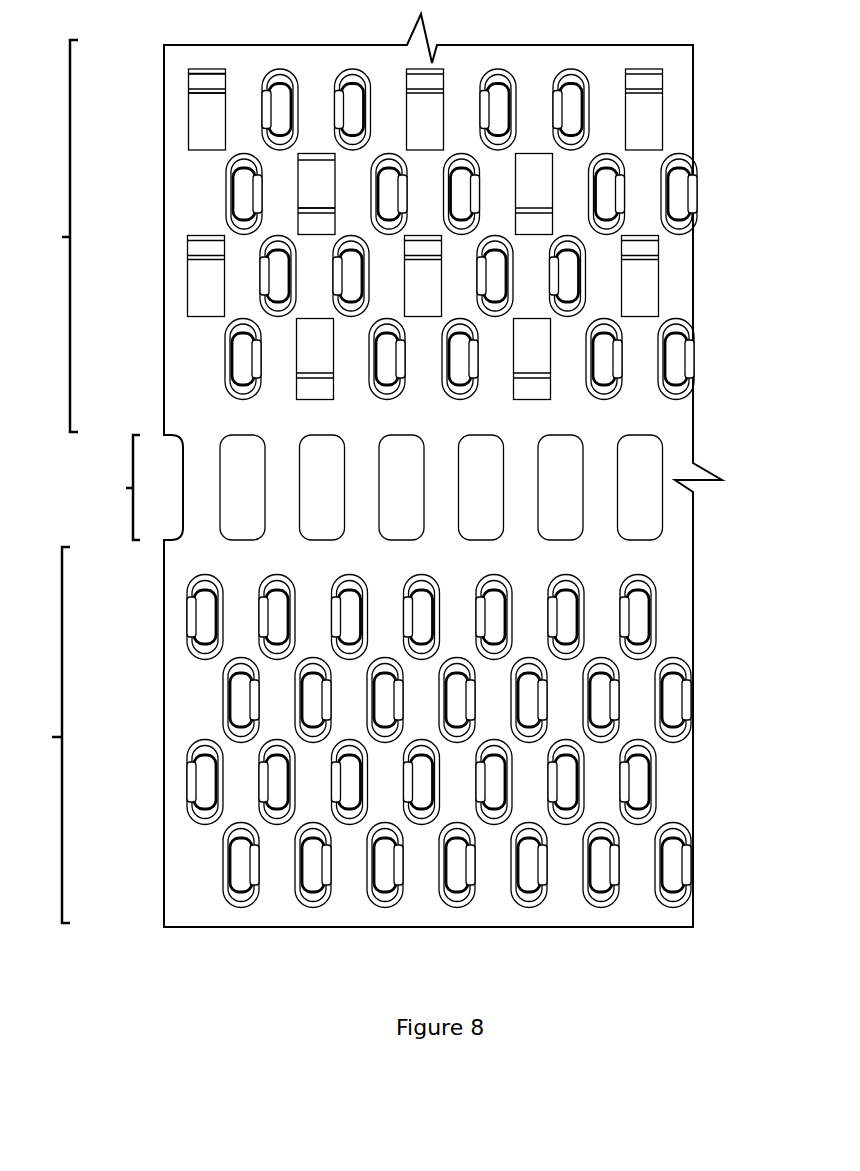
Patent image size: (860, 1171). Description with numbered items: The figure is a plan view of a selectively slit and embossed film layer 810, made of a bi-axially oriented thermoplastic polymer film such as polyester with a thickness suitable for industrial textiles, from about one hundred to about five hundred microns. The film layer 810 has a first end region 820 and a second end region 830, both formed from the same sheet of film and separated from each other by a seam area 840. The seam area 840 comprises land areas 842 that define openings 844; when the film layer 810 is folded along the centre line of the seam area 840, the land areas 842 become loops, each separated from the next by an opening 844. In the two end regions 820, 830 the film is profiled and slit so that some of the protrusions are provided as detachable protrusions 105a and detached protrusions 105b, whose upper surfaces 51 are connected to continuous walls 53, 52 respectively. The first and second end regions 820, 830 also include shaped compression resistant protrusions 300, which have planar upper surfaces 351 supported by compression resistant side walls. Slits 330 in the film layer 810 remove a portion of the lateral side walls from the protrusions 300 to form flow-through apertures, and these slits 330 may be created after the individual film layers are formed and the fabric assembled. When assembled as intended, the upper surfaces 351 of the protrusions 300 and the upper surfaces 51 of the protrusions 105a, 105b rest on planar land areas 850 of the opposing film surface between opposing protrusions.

The film layer 810 is at (740, 148).
The first end region 820 is at (48, 236).
The second end region 830 is at (41, 735).
The seam area 840 is at (334, 487).
The land areas 842 is at (600, 517).
The openings 844 is at (238, 523).
The planar land areas 850 is at (273, 875).
The detachable protrusions 105a is at (316, 150).
The detached protrusions 105b is at (214, 66).
The upper surfaces 51 is at (310, 162).
The continuous wall 52 is at (205, 76).
The continuous wall 53 is at (312, 222).
The compression resistant protrusions 300 is at (704, 200).
The slits 330 is at (250, 187).
The planar upper surfaces 351 is at (678, 858).